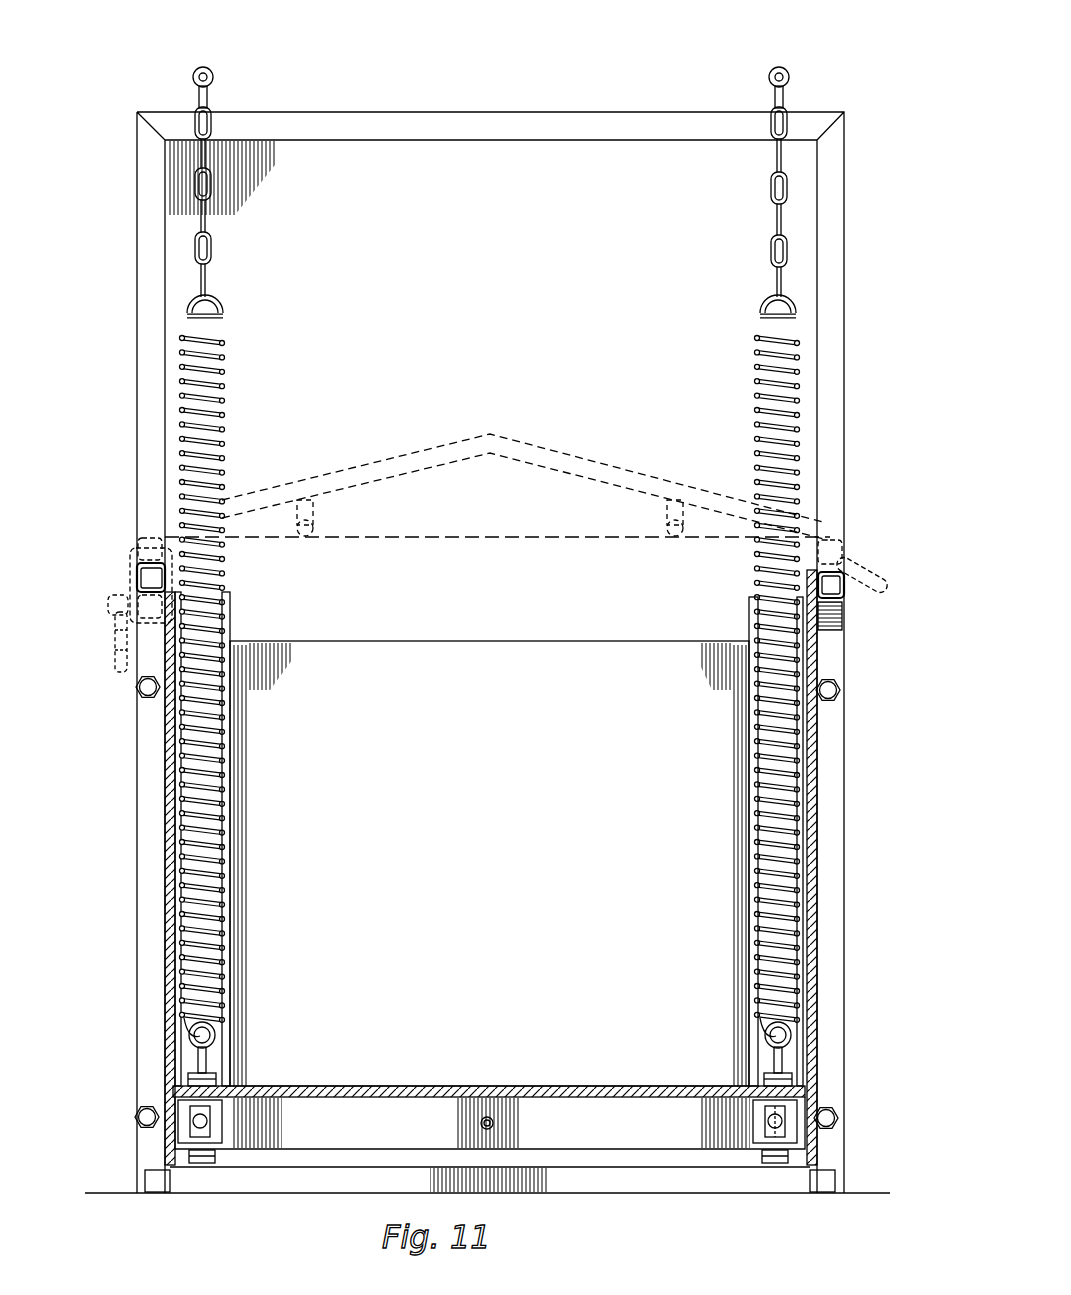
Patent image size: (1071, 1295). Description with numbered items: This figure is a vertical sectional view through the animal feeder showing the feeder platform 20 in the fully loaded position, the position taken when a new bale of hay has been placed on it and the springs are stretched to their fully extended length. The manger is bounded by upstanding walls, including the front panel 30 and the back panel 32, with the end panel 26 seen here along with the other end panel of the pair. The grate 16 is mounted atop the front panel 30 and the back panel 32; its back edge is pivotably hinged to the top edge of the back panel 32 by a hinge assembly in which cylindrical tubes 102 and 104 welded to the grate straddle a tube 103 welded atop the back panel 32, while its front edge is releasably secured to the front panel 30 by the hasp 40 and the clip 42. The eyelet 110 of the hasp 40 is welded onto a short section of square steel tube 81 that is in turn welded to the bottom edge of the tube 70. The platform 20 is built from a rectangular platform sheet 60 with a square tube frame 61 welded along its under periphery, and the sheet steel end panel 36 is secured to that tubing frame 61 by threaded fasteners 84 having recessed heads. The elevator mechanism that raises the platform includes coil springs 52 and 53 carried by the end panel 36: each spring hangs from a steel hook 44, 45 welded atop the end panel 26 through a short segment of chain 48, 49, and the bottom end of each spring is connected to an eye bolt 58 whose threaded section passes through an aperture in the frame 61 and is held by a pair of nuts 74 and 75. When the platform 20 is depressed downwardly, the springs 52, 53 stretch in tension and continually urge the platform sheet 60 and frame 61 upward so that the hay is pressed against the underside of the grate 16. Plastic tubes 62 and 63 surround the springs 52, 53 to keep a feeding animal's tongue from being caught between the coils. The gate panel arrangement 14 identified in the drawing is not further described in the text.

The gate assembly 14 is at (402, 537).
The grate 16 is at (585, 455).
The feeder platform 20 is at (380, 1086).
The end panel 26 is at (137, 188).
The front panel 30 is at (133, 1005).
The back panel 32 is at (845, 892).
The end panel 36 is at (501, 878).
The hasp 40 is at (122, 568).
The clip 42 is at (113, 662).
The hook 44 is at (203, 67).
The hook 45 is at (782, 68).
The chain 48 is at (212, 292).
The chain 49 is at (787, 228).
The coil spring 52 is at (223, 388).
The coil spring 53 is at (760, 320).
The eye bolt 58 is at (760, 1050).
The platform sheet 60 is at (273, 1083).
The square tube frame 61 is at (178, 1104).
The plastic tube 62 is at (228, 620).
The plastic tube 63 is at (752, 622).
The tube 70 is at (152, 540).
The nut 74 is at (765, 1085).
The nut 75 is at (768, 1163).
The square steel tube 81 is at (150, 628).
The threaded fastener 84 is at (490, 1118).
The cylindrical tube 102 is at (865, 541).
The tube 103 is at (894, 439).
The cylindrical tube 104 is at (860, 556).
The eyelet 110 is at (112, 605).